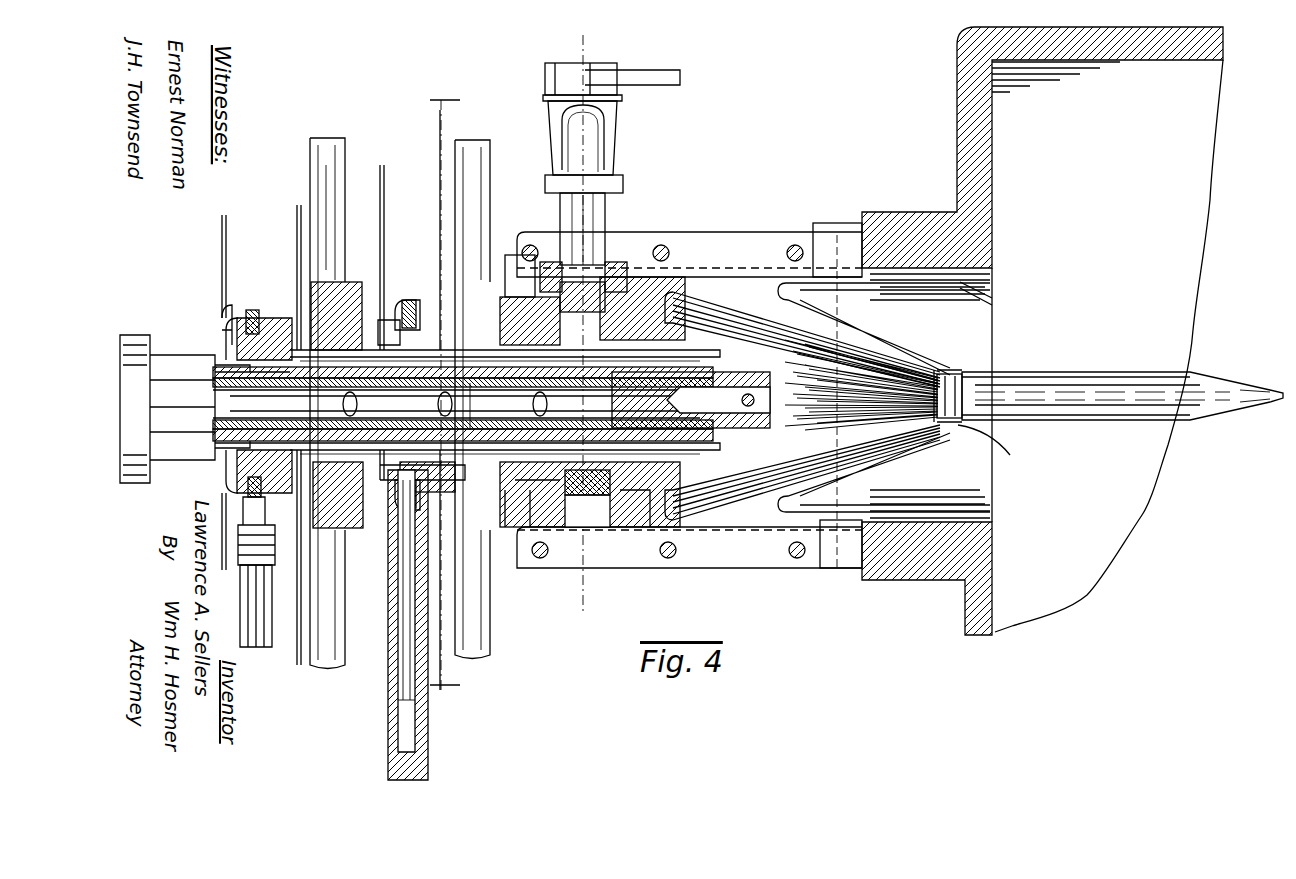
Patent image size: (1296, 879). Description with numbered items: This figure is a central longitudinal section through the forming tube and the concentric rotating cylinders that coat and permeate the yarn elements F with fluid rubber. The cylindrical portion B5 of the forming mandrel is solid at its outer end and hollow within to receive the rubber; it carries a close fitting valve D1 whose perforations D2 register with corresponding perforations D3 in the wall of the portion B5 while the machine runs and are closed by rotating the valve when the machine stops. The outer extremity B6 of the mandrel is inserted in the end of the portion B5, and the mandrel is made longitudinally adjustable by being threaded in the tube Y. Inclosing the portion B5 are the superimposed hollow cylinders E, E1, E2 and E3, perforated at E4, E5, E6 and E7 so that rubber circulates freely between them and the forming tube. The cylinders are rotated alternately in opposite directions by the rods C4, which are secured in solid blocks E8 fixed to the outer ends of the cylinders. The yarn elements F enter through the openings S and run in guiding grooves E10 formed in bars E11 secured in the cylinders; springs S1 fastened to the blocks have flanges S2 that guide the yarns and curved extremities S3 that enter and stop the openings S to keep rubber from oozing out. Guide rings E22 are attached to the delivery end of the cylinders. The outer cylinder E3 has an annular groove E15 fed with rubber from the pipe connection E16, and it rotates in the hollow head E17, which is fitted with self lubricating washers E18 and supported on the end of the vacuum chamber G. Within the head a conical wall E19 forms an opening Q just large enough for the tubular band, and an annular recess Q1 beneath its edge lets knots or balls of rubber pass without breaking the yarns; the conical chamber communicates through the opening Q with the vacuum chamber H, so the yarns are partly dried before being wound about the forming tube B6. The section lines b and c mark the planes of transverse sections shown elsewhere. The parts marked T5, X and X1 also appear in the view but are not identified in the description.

The vacuum chamber G is at (957, 70).
The vacuum chamber H is at (1210, 140).
The hollow head E17 is at (728, 232).
The guide rings E22 is at (720, 520).
The annular groove E15 is at (620, 280).
The pipe connection E16 is at (600, 270).
The perforation E5 is at (540, 262).
The bars E11 is at (510, 297).
The lever arm T5 is at (663, 82).
The section line b— b is at (594, 320).
The section line c— c is at (450, 394).
The perforations D2 is at (466, 402).
The perforations D3 is at (631, 400).
The perforation E4 is at (470, 406).
The valve D1 is at (230, 380).
The tube Y is at (135, 483).
The tubular portion of forming mandrel B5 is at (225, 445).
The solid block E8 is at (495, 282).
The cylinder E1 is at (368, 528).
The cylinder E2 is at (430, 492).
The cylinder E is at (422, 471).
The guiding grooves E10 is at (418, 508).
The flanges S2 is at (385, 318).
The curved extremities S3 is at (400, 510).
The openings S is at (420, 490).
The springs S1 is at (240, 555).
The rods C4 is at (428, 770).
The yarn elements F is at (890, 400).
The outer extremity of mandrel B6 is at (990, 383).
The nozzle tube X is at (1085, 380).
The nozzle tip X1 is at (1265, 398).
The annular recess Q1 is at (975, 345).
The opening Q is at (992, 447).
The conical wall E19 is at (940, 345).
The self lubricating washers E18 is at (548, 590).
The outer cylinder E3 is at (550, 527).
The perforation E7 is at (580, 527).
The perforation E6 is at (600, 527).